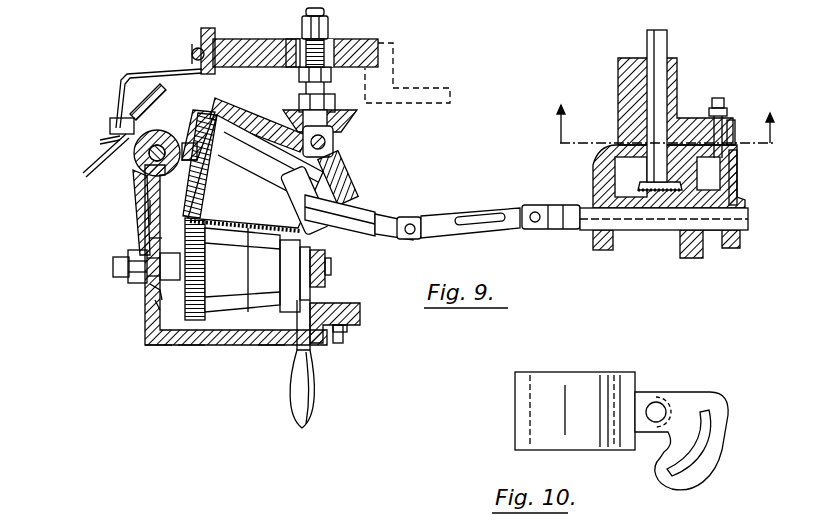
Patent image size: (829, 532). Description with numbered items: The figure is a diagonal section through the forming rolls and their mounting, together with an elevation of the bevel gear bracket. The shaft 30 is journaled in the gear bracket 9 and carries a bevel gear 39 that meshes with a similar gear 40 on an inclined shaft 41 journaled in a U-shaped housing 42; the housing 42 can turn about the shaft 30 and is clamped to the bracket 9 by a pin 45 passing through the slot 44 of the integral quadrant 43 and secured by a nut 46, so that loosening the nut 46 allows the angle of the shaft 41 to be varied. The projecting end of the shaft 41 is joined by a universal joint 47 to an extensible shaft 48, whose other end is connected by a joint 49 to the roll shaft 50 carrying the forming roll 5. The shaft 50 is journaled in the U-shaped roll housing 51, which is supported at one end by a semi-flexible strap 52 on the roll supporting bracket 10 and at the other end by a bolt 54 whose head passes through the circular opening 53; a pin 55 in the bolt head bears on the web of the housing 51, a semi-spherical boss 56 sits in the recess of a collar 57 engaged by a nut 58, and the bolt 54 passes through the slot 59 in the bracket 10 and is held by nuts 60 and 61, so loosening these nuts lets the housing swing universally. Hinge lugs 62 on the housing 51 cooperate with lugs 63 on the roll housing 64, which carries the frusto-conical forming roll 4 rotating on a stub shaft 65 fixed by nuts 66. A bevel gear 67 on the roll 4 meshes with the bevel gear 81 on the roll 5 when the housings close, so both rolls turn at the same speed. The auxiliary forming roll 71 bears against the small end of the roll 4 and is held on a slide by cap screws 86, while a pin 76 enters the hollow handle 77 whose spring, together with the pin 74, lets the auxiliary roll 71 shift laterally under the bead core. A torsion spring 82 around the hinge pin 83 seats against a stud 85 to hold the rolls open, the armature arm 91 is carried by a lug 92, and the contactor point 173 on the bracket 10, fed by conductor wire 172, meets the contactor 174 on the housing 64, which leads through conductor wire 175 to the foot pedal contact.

In FIG. 9, the forming roll 4 is at (213, 347).
In FIG. 9, the forming roll 5 is at (318, 240).
In FIG. 9, the gear bracket 9 is at (680, 82).
In FIG. 10, the gear bracket 9 is at (640, 388).
In FIG. 9, the roll supporting bracket 10 is at (380, 42).
In FIG. 9, the shaft 30 is at (647, 46).
In FIG. 9, the bevel gear 39 is at (595, 172).
In FIG. 9, the bevel gear 40 is at (700, 256).
In FIG. 9, the inclined shaft 41 is at (655, 231).
In FIG. 9, the U-shaped housing 42 is at (738, 180).
In FIG. 10, the quadrant 43 is at (732, 428).
In FIG. 10, the slot 44 is at (705, 455).
In FIG. 9, the pin 45 is at (735, 120).
In FIG. 9, the nut 46 is at (718, 98).
In FIG. 9, the universal joint 47 is at (550, 230).
In FIG. 9, the extensible shaft 48 is at (470, 230).
In FIG. 9, the universal joint 49 is at (413, 240).
In FIG. 9, the roll shaft 50 is at (360, 218).
In FIG. 9, the roll housing 51 is at (352, 165).
In FIG. 9, the semi-flexible strap 52 is at (200, 50).
In FIG. 9, the circular opening 53 is at (278, 152).
In FIG. 9, the bolt 54 is at (393, 74).
In FIG. 9, the pin 55 is at (304, 186).
In FIG. 9, the semi-spherical boss 56 is at (335, 143).
In FIG. 9, the collar 57 is at (357, 117).
In FIG. 9, the nut 58 is at (298, 103).
In FIG. 9, the slot 59 is at (290, 40).
In FIG. 9, the nut 60 is at (330, 30).
In FIG. 9, the nut 61 is at (299, 75).
In FIG. 9, the hinge lugs 62 is at (130, 100).
In FIG. 9, the lugs 63 is at (140, 172).
In FIG. 9, the roll housing 64 is at (147, 347).
In FIG. 9, the stub shaft 65 is at (113, 268).
In FIG. 9, the nuts 66 is at (150, 288).
In FIG. 9, the bevel gear 67 is at (188, 347).
In FIG. 9, the auxiliary forming roll 71 is at (267, 347).
In FIG. 9, the pin 74 is at (337, 346).
In FIG. 9, the pin 76 is at (283, 375).
In FIG. 9, the hollow handle 77 is at (312, 408).
In FIG. 9, the bevel gear 81 is at (147, 210).
In FIG. 9, the torsion spring 82 is at (148, 240).
In FIG. 9, the hinge pin 83 is at (134, 180).
In FIG. 9, the stud 85 is at (150, 302).
In FIG. 9, the cap screws 86 is at (332, 265).
In FIG. 9, the arm 91 is at (348, 303).
In FIG. 9, the lug 92 is at (352, 332).
In FIG. 9, the conductor wire 172 is at (84, 174).
In FIG. 9, the contactor point 173 is at (110, 124).
In FIG. 9, the contactor 174 is at (100, 141).
In FIG. 9, the conductor wire 175 is at (128, 73).